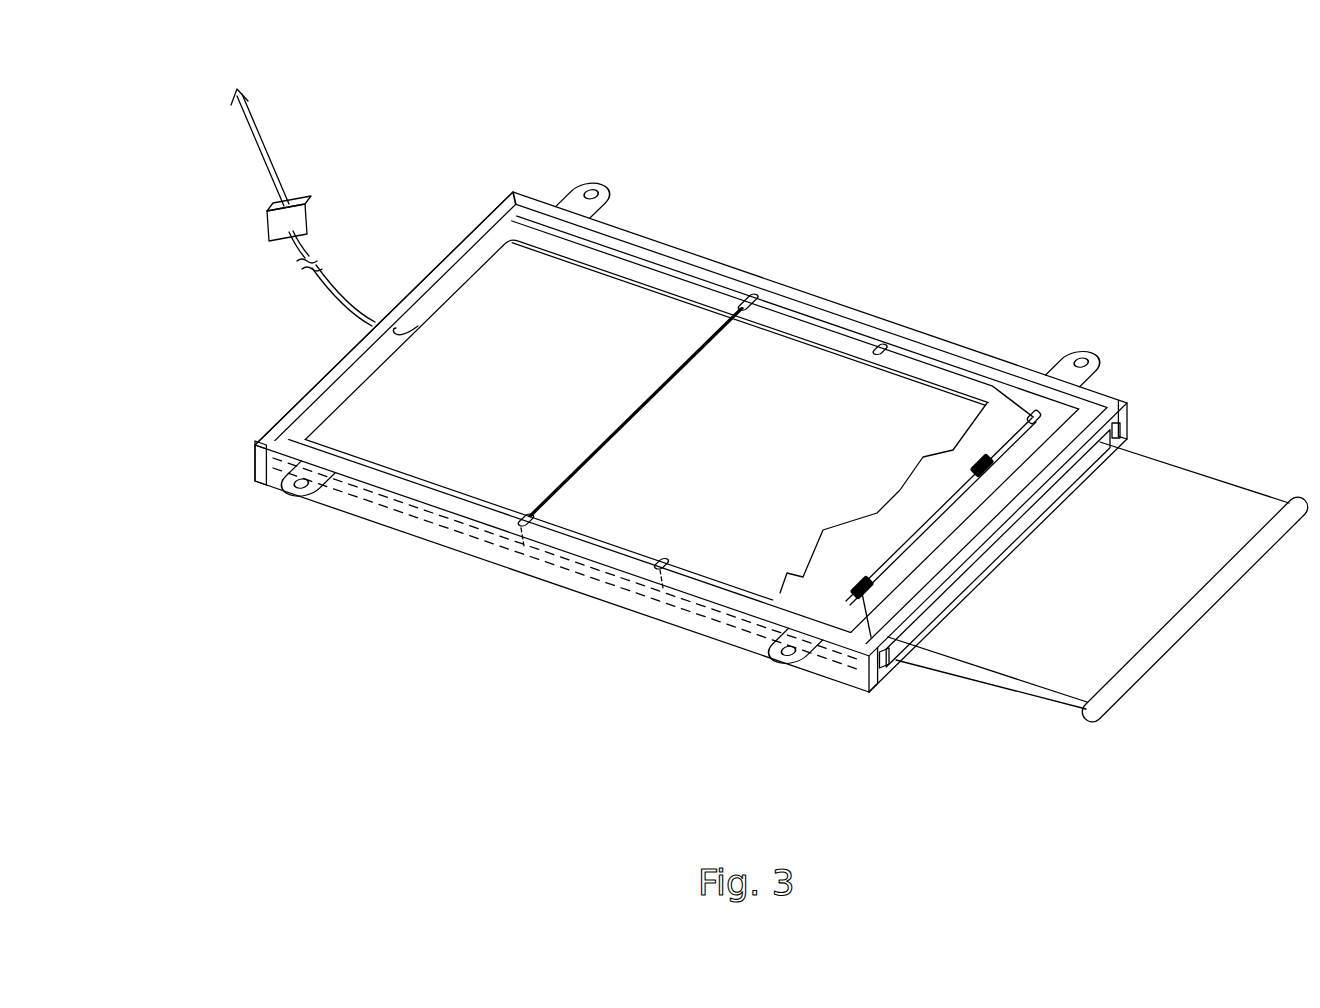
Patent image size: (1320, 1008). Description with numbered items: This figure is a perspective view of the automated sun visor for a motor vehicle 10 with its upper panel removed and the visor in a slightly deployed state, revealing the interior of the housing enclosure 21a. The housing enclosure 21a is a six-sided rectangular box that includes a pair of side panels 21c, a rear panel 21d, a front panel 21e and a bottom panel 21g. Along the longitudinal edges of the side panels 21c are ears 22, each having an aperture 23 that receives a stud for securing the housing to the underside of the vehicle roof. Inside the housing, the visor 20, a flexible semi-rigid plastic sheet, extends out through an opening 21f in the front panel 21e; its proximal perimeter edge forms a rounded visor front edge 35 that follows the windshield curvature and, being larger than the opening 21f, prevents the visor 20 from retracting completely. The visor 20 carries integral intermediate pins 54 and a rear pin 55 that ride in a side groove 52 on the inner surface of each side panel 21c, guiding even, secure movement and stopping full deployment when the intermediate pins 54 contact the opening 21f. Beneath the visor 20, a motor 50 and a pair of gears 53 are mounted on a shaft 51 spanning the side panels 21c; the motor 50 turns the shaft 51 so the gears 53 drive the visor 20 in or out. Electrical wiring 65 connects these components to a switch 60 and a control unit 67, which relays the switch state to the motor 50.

The automated sun visor for a motor vehicle 10 is at (185, 757).
The visor 20 is at (1164, 466).
The housing enclosure 21a is at (211, 302).
The side panels 21c is at (633, 238).
The rear panel 21d is at (300, 432).
The front panel 21e is at (880, 674).
The opening 21f is at (889, 655).
The bottom panel 21g is at (513, 573).
The ears 22 is at (578, 193).
The aperture 23 is at (595, 189).
The visor front edge 35 is at (1232, 563).
The motor 50 is at (1045, 414).
The shaft 51 is at (930, 517).
The side groove 52 is at (660, 270).
The gears 53 is at (984, 462).
The intermediate pin 54 is at (881, 351).
The rear pin 55 is at (758, 296).
The switch 60 is at (257, 135).
The electrical wiring 65 is at (480, 262).
The control unit 67 is at (292, 204).